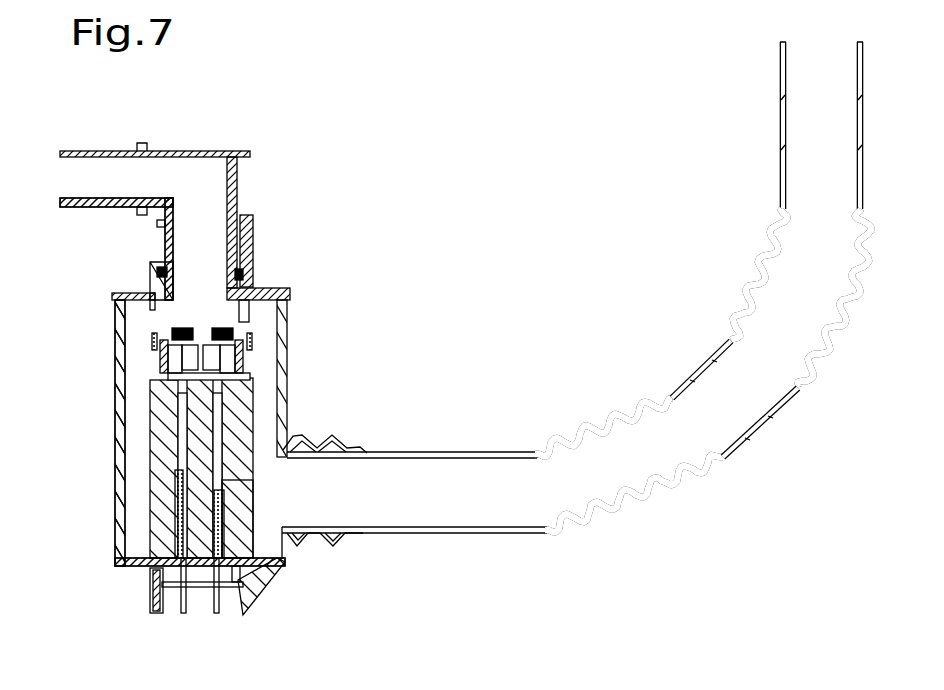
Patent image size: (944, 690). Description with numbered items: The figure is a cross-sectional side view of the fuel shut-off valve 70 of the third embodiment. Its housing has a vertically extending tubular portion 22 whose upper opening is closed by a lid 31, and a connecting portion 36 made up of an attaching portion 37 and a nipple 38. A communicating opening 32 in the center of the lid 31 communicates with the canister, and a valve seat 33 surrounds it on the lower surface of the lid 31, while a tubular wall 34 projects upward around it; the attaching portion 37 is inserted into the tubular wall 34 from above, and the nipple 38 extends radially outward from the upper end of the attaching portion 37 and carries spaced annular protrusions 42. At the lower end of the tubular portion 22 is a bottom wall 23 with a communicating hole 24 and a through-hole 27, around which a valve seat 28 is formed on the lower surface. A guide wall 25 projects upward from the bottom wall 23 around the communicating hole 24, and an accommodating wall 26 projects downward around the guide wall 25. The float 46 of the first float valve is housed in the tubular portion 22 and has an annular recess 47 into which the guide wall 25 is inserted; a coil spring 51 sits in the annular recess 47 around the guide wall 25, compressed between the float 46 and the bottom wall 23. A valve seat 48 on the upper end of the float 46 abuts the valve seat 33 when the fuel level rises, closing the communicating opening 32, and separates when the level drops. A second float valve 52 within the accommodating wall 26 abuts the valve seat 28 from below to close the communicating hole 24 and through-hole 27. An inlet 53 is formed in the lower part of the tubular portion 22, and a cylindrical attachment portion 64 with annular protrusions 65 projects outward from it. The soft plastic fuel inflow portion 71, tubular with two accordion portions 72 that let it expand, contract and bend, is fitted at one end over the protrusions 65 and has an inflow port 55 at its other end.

The annular protrusions 42 is at (112, 151).
The connecting portion 36 is at (73, 220).
The nipple 38 is at (134, 208).
The attaching portion 37 is at (165, 243).
The lid 31 is at (120, 290).
The communicating opening 32 is at (175, 297).
The tubular wall 34 is at (253, 234).
The valve seat 33 is at (242, 320).
The valve seat 48 is at (172, 330).
The fuel shut-off valve 70 is at (79, 368).
The tubular portion 22 is at (117, 474).
The bottom wall 23 is at (140, 568).
The annular recess 47 is at (183, 438).
The float 46 is at (247, 382).
The guide wall 25 is at (228, 510).
The spring 51 is at (172, 547).
The accommodating wall 26 is at (150, 600).
The valve seat 28 is at (253, 562).
The through-hole 27 is at (183, 588).
The communicating hole 24 is at (205, 562).
The second float valve 52 is at (240, 612).
The inlet 53 is at (280, 455).
The attachment portion 64 is at (345, 440).
The annular protrusions 65 is at (300, 542).
The inflow port 55 is at (785, 42).
The accordion portion 72 is at (767, 252).
The fuel inflow portion 71 is at (700, 372).